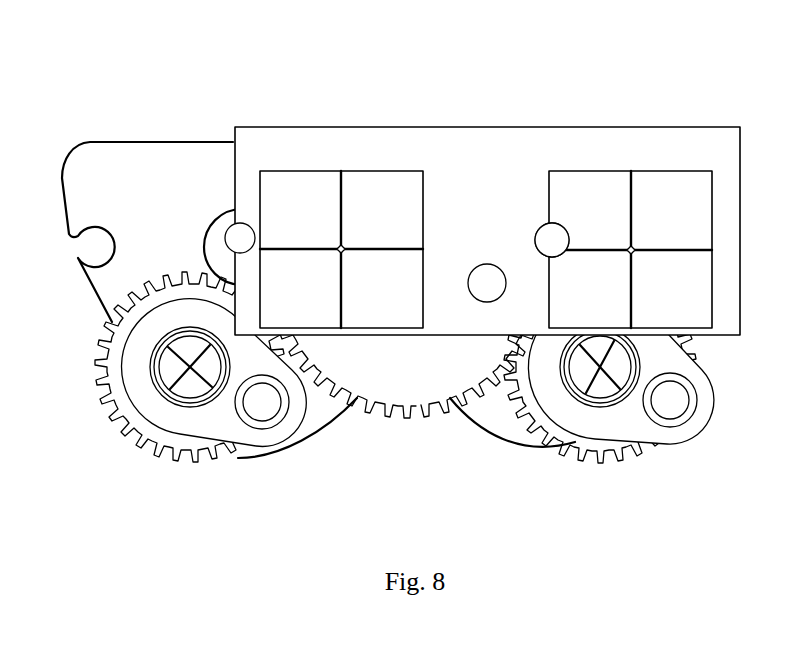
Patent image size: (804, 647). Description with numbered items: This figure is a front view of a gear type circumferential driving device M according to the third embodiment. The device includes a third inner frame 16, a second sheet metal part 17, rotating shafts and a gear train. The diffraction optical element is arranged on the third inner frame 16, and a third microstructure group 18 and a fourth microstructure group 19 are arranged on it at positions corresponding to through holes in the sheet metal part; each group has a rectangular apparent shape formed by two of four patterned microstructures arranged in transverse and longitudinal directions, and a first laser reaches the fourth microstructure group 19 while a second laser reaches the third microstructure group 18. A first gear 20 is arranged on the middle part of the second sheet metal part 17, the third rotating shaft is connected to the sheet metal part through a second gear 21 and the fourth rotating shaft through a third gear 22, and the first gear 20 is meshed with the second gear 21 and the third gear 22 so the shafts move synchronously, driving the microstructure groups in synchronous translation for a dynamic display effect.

The module M is at (405, 276).
The third inner frame 16 is at (489, 163).
The second sheet metal part 17 is at (118, 158).
The third microstructure group 18 is at (357, 192).
The fourth microstructure group 19 is at (667, 192).
The first gear 20 is at (390, 377).
The second gear 21 is at (143, 425).
The third gear 22 is at (572, 440).